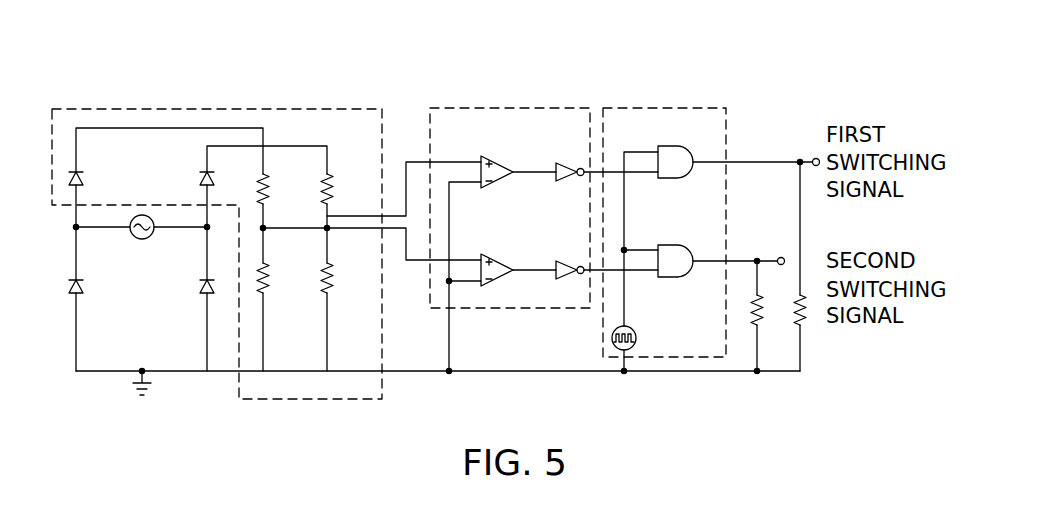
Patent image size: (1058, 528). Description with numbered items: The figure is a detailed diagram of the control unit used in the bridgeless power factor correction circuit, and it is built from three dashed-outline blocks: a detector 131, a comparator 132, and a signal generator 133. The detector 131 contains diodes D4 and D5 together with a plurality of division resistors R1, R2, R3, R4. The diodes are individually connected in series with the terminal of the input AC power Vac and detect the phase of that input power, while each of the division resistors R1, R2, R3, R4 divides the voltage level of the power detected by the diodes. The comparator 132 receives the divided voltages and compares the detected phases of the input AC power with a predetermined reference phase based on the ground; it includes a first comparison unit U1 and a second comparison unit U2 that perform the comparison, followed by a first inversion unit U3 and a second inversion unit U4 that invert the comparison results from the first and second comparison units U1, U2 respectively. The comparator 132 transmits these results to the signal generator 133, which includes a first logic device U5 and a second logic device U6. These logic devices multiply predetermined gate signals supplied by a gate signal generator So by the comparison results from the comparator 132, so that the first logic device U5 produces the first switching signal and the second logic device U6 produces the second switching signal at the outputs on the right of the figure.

The detector 131 is at (283, 108).
The comparator 132 is at (507, 108).
The signal generator 133 is at (676, 108).
The diode D4 is at (92, 178).
The fifth diode D5 is at (223, 178).
The division resistor R1 is at (280, 190).
The division resistor R2 is at (344, 190).
The division resistor R3 is at (280, 279).
The division resistor R4 is at (344, 279).
The input AC power Vac is at (142, 239).
The first comparison unit U1 is at (500, 181).
The second comparison unit U2 is at (500, 279).
The first inversion unit U3 is at (570, 184).
The second inversion unit U4 is at (570, 282).
The first logic device U5 is at (675, 174).
The second logic device U6 is at (675, 272).
The gate signal generator So is at (639, 338).